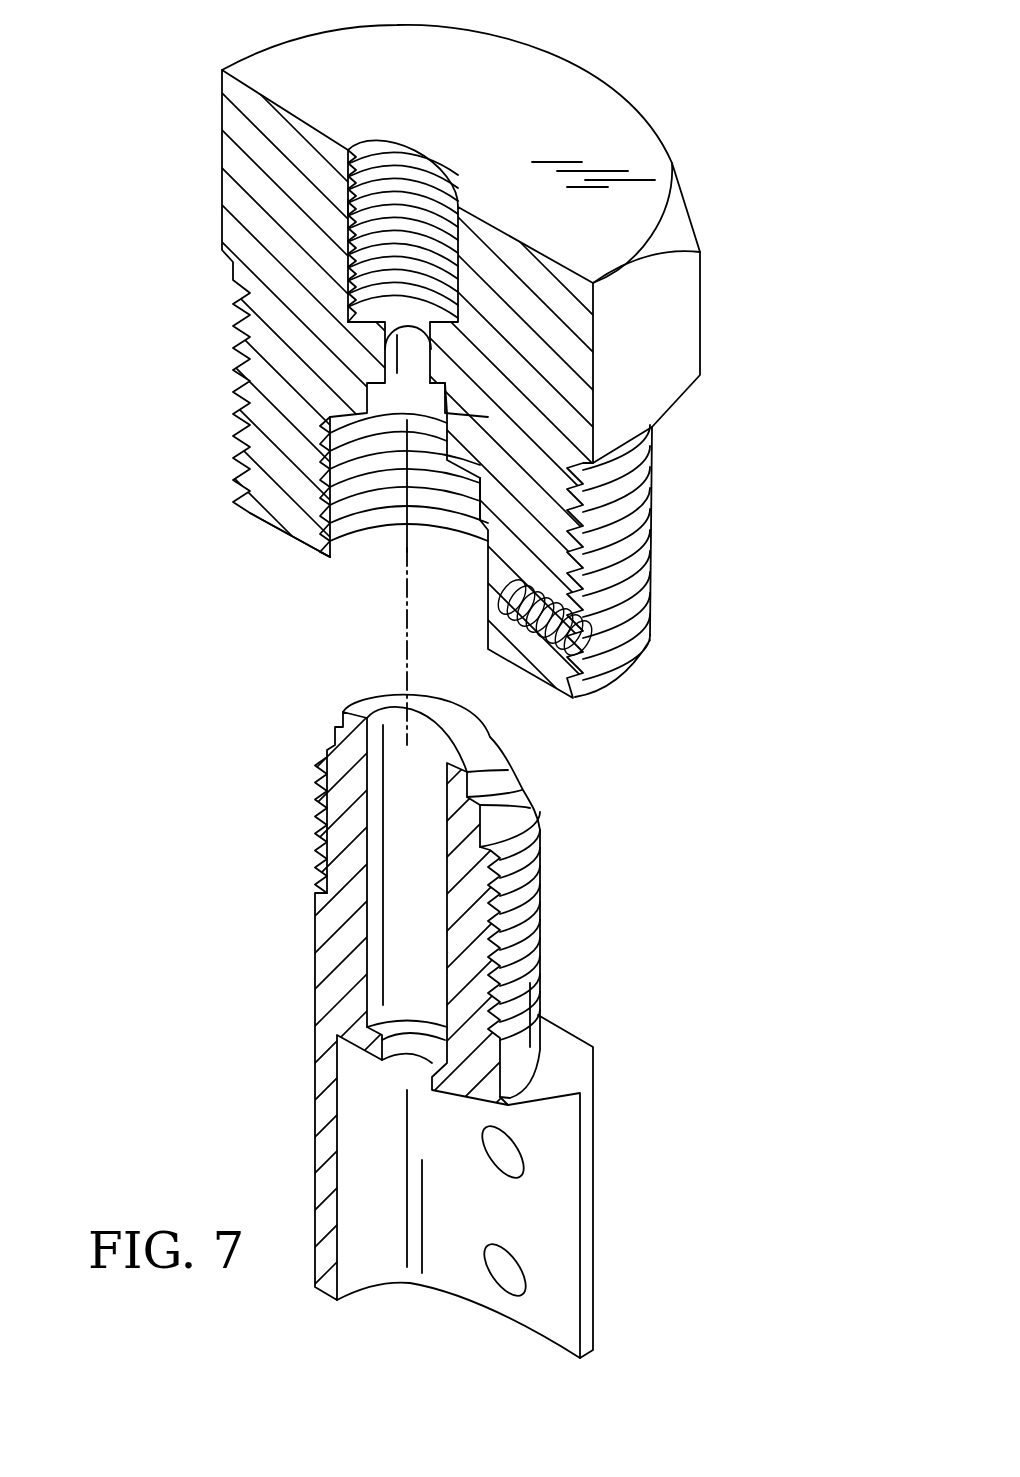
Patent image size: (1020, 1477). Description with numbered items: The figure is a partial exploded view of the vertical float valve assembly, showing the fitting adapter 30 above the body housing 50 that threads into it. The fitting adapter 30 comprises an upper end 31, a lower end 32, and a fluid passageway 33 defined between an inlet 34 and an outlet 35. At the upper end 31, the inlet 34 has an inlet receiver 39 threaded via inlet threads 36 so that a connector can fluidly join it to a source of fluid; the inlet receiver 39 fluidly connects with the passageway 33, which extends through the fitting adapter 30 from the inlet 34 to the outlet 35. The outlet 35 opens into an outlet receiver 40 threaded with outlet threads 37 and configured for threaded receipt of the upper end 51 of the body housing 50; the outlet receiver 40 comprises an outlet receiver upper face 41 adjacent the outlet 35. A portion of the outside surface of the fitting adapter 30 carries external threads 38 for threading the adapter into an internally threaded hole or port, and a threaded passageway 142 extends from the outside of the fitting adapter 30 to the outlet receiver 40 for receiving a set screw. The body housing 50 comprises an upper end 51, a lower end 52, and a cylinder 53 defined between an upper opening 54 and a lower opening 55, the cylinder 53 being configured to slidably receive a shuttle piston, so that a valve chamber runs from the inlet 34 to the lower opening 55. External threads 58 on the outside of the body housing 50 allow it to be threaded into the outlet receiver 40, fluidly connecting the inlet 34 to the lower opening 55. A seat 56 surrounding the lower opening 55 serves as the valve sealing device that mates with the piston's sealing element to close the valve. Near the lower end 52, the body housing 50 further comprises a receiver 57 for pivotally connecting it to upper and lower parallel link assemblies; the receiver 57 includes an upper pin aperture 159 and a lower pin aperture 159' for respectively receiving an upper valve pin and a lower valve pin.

The fitting adapter 30 is at (672, 306).
The upper end 31 is at (570, 82).
The lower end 32 is at (280, 533).
The fluid passageway 33 is at (407, 350).
The inlet 34 is at (408, 138).
The outlet 35 is at (445, 410).
The inlet threads 36 is at (345, 205).
The outlet threads 37 is at (363, 523).
The external threads 38 is at (630, 555).
The inlet receiver 39 is at (428, 195).
The outlet receiver 40 is at (430, 497).
The outlet receiver upper face 41 is at (338, 533).
The threaded passageway 142 is at (583, 640).
The body housing 50 is at (522, 1001).
The upper end 51 is at (473, 745).
The lower end 52 is at (382, 1287).
The cylinder 53 is at (434, 747).
The upper opening 54 is at (377, 712).
The lower opening 55 is at (397, 1048).
The seat 56 is at (398, 1037).
The receiver 57 is at (547, 1202).
The external threads 58 is at (537, 907).
The upper pin aperture 159 is at (488, 1171).
The lower pin aperture 159' is at (484, 1293).